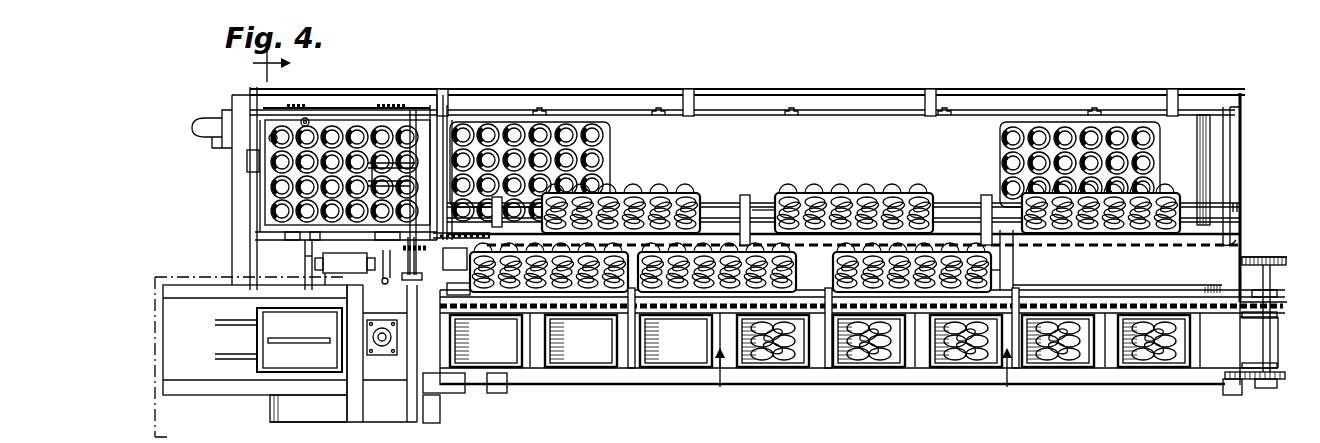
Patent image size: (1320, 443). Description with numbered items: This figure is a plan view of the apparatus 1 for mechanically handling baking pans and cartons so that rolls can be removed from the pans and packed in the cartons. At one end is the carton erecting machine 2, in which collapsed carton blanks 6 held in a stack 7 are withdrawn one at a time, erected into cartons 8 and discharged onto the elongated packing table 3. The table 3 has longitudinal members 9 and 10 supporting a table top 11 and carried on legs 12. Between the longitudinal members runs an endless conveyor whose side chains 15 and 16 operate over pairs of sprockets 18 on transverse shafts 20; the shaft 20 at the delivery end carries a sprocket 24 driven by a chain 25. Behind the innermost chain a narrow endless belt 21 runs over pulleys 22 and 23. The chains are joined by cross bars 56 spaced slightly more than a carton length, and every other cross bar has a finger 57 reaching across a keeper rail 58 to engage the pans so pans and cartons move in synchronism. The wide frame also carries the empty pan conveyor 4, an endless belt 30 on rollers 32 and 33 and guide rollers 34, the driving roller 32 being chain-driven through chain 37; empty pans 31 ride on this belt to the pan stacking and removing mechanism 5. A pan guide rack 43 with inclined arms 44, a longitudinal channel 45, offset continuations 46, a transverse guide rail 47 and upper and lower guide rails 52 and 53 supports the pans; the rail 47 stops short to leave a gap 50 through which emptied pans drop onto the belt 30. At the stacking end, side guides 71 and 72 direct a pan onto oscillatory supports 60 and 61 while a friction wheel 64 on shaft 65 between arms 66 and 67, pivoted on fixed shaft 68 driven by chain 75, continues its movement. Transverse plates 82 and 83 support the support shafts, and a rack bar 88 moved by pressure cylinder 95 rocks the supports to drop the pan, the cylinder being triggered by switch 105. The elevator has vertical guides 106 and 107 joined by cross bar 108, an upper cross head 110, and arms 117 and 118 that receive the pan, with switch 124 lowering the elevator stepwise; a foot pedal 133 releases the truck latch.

The apparatus 1 is at (1247, 94).
The carton erecting machine 2 is at (270, 398).
The packing table 3 is at (692, 95).
The empty pan conveyor 4 is at (852, 110).
The pan stacking and removing mechanism 5 is at (444, 90).
The collapsed carton blanks 6 is at (261, 65).
The stack 7 is at (258, 365).
The cartons 8 is at (522, 367).
The longitudinal member 9 is at (833, 380).
The longitudinal member 10 is at (1048, 297).
The table top 11 is at (1263, 343).
The legs 12 is at (1224, 394).
The side chain 15 is at (478, 385).
The side chain 16 is at (447, 289).
The sprockets 18 is at (1284, 310).
The transverse shaft 20 is at (1272, 275).
The endless belt 21 is at (1150, 280).
The pulley 22 is at (463, 274).
The pulley 23 is at (1277, 294).
The sprocket 24 is at (1280, 258).
The chain 25 is at (1258, 256).
The endless belt 30 is at (945, 120).
The empty pans 31 is at (604, 162).
The roller 32 is at (450, 110).
The roller 33 is at (1200, 115).
The guide rollers 34 is at (792, 108).
The chain 37 is at (420, 252).
The pan guide rack 43 is at (990, 258).
The arms 44 is at (990, 270).
The longitudinal channel 45 is at (708, 226).
The offset continuations 46 is at (748, 190).
The guide rail 47 is at (652, 186).
The opening or gap 50 is at (1232, 240).
The upper longitudinal guide rail 52 is at (762, 205).
The lower longitudinal guide rail 53 is at (812, 184).
The cross bars 56 is at (632, 370).
The finger 57 is at (585, 312).
The keeper rail 58 is at (690, 310).
The oscillatory support 60 is at (392, 245).
The oscillatory support 61 is at (348, 120).
The friction wheel 64 is at (378, 140).
The transverse shaft 65 is at (380, 128).
The arm 66 is at (412, 128).
The arm 67 is at (418, 150).
The fixed shaft 68 is at (448, 95).
The side guide 71 is at (305, 228).
The side guide 72 is at (332, 120).
The chain 75 is at (360, 250).
The transverse plate 82 is at (455, 128).
The transverse plate 83 is at (262, 186).
The bar 88 is at (258, 220).
The pressure actuated cylinder 95 is at (247, 160).
The switch 105 is at (275, 125).
The vertical guide 106 is at (380, 260).
The vertical guide 107 is at (305, 290).
The cross bar 108 is at (355, 282).
The upper cross head 110 is at (330, 278).
The arm 117 is at (398, 268).
The arm 118 is at (312, 256).
The switch 124 is at (308, 118).
The foot pedal 133 is at (200, 128).